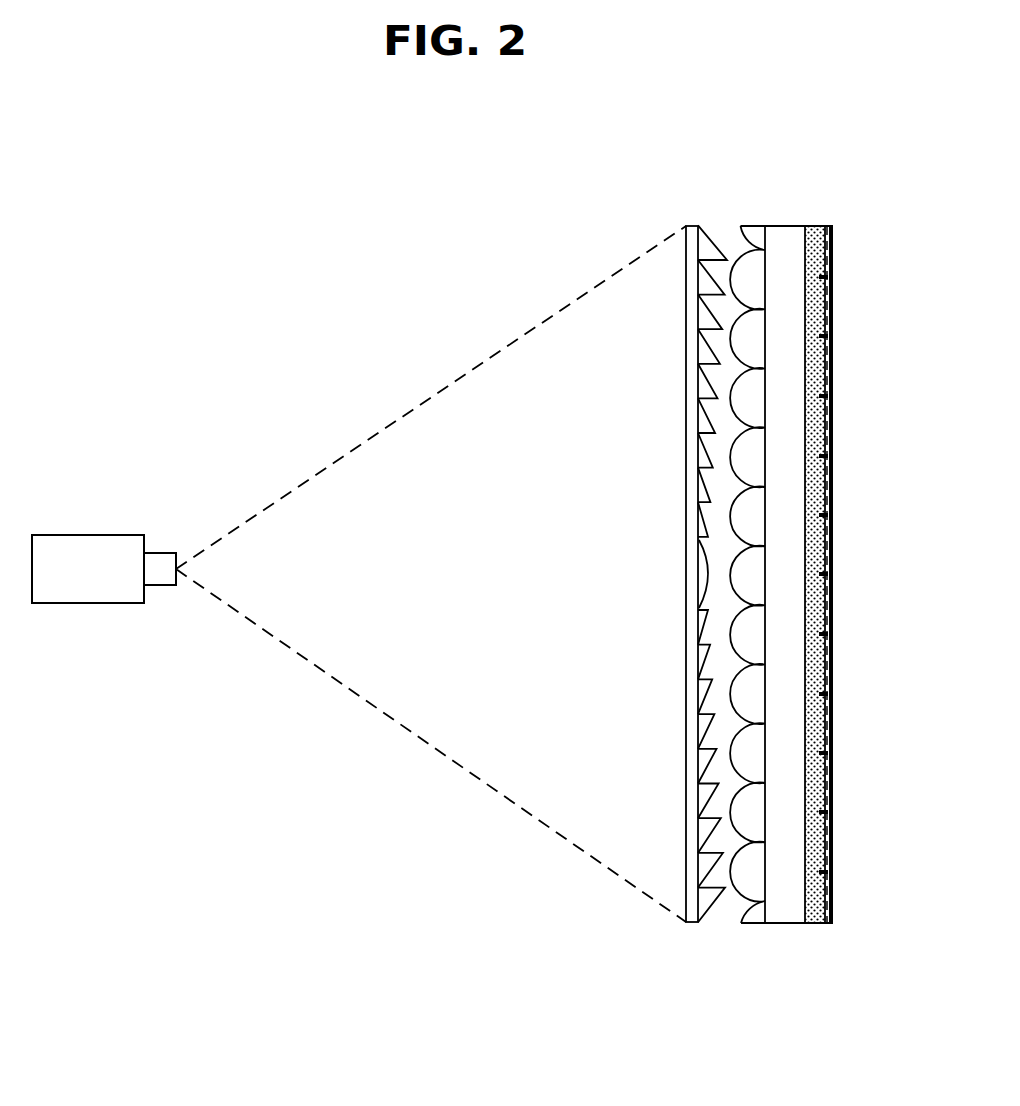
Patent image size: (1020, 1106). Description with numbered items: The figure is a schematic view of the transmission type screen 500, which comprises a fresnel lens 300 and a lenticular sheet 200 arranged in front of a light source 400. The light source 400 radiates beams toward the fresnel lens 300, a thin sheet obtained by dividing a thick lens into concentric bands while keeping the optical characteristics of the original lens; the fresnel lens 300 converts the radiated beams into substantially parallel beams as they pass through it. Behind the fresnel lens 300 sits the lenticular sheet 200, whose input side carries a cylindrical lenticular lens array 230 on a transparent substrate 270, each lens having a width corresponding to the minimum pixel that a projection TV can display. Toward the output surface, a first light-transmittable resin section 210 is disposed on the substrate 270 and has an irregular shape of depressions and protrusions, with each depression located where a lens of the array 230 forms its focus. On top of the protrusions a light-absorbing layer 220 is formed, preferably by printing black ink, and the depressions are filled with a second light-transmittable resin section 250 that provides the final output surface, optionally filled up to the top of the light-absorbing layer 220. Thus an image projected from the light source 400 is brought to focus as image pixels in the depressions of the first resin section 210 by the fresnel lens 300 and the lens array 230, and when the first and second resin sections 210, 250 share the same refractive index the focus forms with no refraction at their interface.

The transmission type screen 500 is at (742, 209).
The light source 400 is at (88, 603).
The fresnel lens 300 is at (684, 928).
The lenticular sheet 200 is at (792, 641).
The cylindrical lenticular lens array 230 is at (748, 923).
The transparent substrate 270 is at (787, 910).
The first light-transmittable resin section 210 is at (817, 921).
The second light-transmittable resin section 250 is at (824, 871).
The light-absorbing layer 220 is at (831, 900).